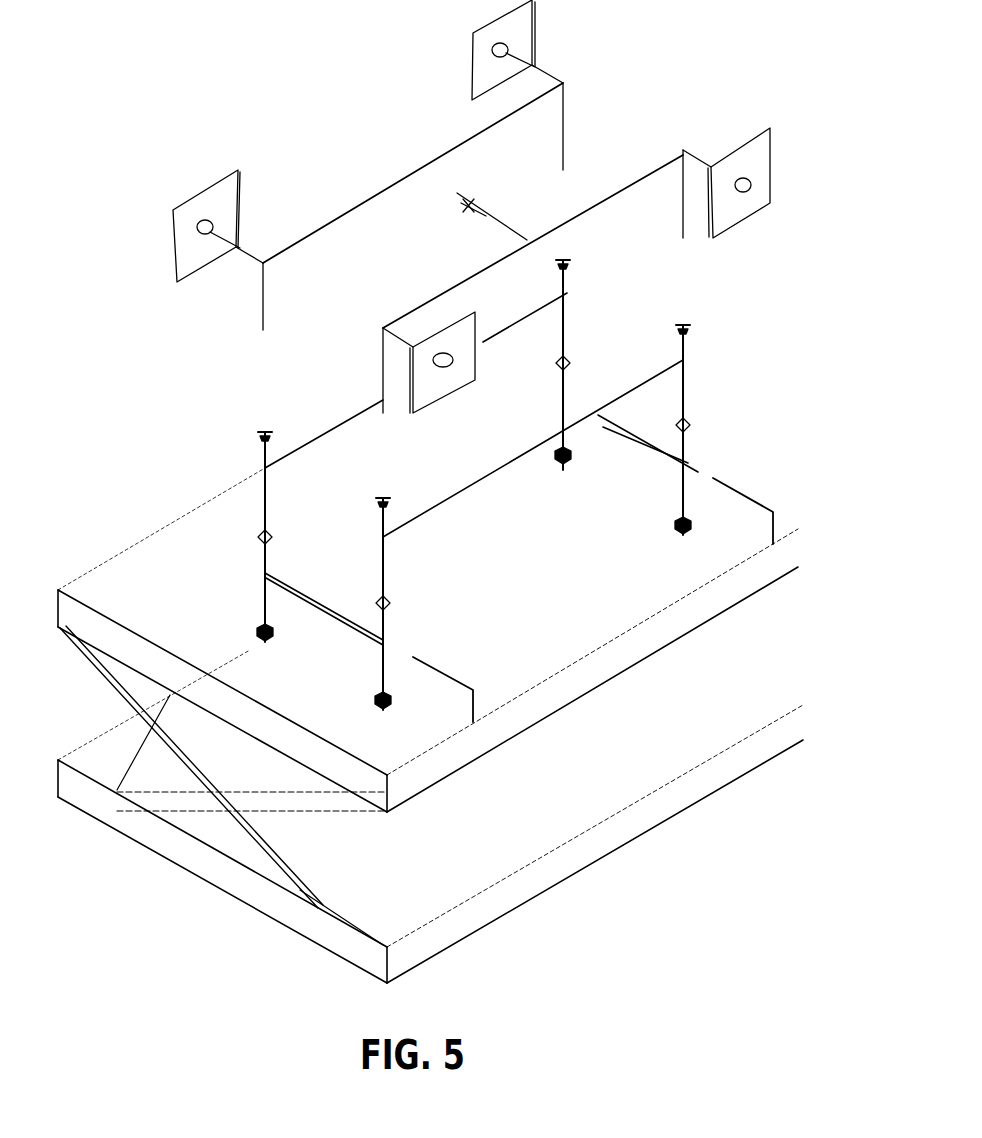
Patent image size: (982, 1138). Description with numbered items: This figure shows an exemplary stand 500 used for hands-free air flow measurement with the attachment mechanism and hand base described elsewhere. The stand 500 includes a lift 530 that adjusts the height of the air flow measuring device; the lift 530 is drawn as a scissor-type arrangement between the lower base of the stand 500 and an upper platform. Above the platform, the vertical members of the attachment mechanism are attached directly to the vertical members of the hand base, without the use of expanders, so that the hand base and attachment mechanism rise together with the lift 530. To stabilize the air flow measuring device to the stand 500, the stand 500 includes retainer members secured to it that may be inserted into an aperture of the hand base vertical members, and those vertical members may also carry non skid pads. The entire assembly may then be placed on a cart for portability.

The lift 530 is at (323, 847).
The stand 500 is at (737, 848).